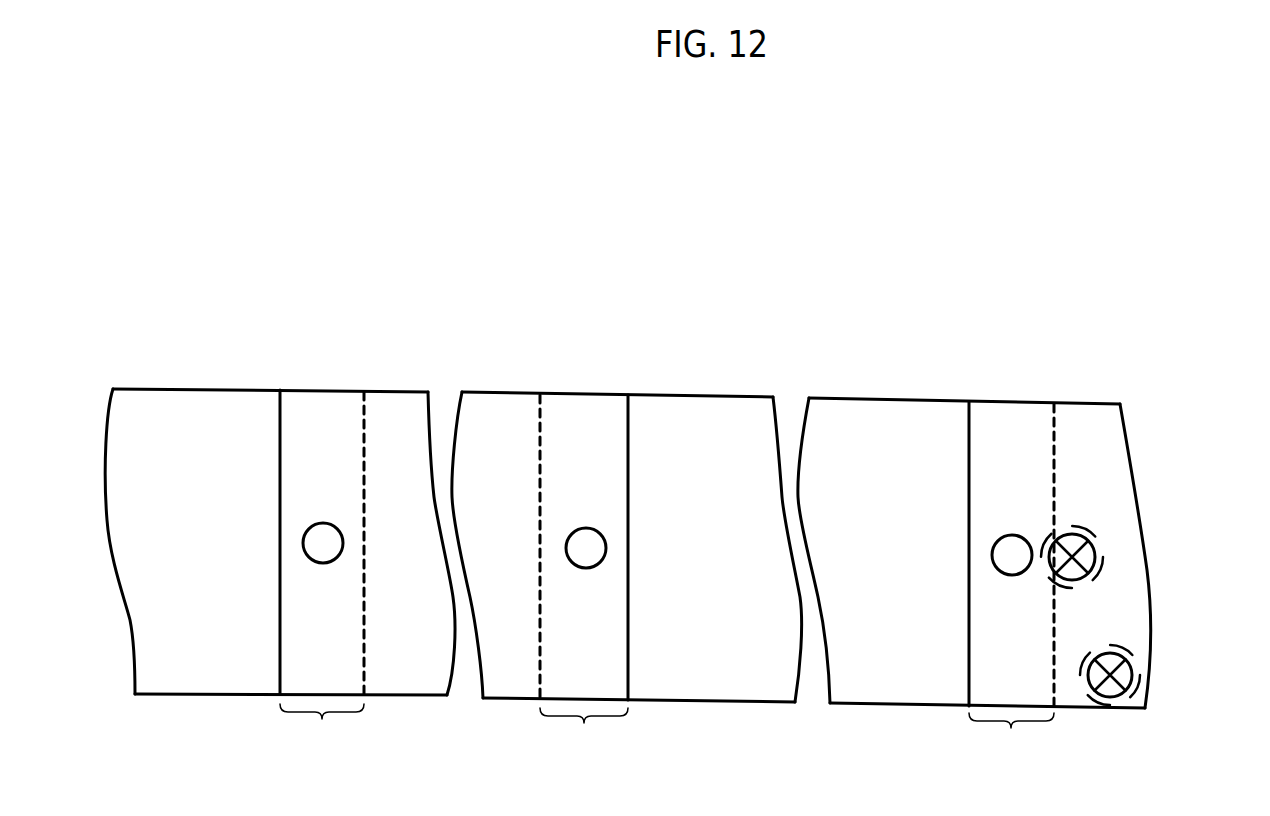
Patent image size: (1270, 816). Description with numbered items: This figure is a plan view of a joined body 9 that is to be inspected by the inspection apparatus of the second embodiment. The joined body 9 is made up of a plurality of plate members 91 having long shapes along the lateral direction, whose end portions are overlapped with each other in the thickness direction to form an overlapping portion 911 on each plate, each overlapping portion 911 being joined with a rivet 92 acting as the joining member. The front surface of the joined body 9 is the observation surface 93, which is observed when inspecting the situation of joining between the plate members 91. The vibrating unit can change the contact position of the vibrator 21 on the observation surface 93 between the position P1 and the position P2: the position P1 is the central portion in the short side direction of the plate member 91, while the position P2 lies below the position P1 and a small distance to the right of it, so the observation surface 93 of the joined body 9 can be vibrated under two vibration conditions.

The joined body 9 is at (961, 299).
The plate member 91 is at (193, 417).
The overlapping portion 911 is at (667, 581).
The rivet 92 is at (287, 532).
The observation surface 93 is at (592, 661).
The vibrator 21 is at (1103, 545).
The position P1 is at (1077, 527).
The position P2 is at (1147, 710).